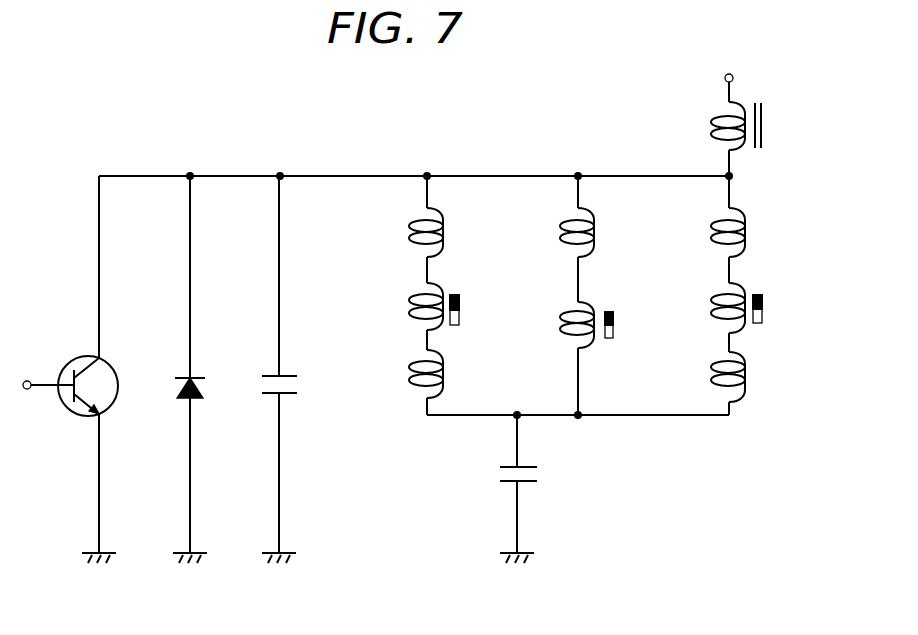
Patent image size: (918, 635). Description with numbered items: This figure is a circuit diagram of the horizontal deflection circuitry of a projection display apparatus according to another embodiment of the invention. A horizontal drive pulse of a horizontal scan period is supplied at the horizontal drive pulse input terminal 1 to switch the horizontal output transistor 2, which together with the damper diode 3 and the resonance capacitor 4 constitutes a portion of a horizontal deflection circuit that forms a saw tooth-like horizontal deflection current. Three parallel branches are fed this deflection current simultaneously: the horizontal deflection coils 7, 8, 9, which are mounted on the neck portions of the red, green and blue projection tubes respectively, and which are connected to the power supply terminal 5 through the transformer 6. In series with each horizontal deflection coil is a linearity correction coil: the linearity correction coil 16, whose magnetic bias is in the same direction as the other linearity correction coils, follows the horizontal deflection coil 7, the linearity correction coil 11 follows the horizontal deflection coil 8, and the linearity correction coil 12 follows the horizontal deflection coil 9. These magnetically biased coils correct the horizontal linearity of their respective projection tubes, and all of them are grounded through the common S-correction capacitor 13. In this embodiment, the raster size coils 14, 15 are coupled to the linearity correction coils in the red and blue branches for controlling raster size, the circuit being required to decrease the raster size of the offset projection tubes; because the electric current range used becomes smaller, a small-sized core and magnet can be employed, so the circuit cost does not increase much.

The horizontal drive pulse input terminal 1 is at (31, 380).
The horizontal output transistor 2 is at (105, 365).
The damper diode 3 is at (198, 375).
The resonance capacitor 4 is at (290, 375).
The power supply terminal 5 is at (722, 80).
The transformer 6 is at (765, 128).
The horizontal deflection coil 7 is at (400, 237).
The horizontal deflection coil 8 is at (547, 238).
The horizontal deflection coil 9 is at (698, 236).
The linearity correction coil 11 is at (550, 325).
The linearity correction coil 12 is at (712, 312).
The S-correction capacitor 13 is at (500, 468).
The raster size coil 14 is at (405, 378).
The raster size coil 15 is at (712, 372).
The linearity correction coil 16 is at (405, 318).